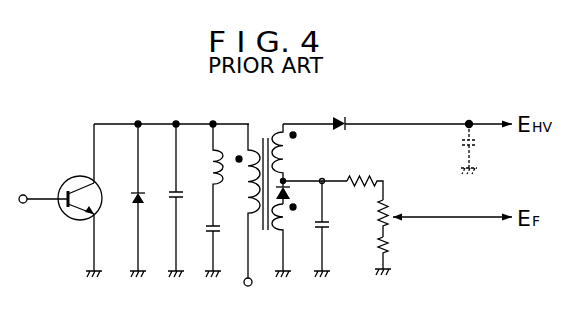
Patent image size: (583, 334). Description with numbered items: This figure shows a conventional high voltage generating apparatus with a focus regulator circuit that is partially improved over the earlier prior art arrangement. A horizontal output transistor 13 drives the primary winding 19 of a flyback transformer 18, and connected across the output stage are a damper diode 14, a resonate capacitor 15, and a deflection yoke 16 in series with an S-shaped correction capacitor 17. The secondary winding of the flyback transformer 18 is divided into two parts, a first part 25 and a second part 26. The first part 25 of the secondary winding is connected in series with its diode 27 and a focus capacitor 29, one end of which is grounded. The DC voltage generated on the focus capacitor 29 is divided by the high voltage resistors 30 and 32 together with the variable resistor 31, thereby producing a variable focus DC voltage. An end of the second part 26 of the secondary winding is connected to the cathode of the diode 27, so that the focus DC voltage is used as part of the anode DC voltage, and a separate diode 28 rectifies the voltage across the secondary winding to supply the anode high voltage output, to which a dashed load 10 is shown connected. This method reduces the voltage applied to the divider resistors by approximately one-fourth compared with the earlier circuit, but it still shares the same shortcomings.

The load capacitance 10 is at (477, 141).
The horizontal output transistor 13 is at (62, 214).
The damper diode 14 is at (147, 195).
The resonate capacitor 15 is at (184, 195).
The deflection yoke 16 is at (224, 152).
The S-shaped correction capacitor 17 is at (208, 230).
The flyback transformer 18 is at (270, 260).
The primary winding 19 is at (249, 195).
The first part of the secondary winding 25 is at (290, 220).
The second part of the secondary winding 26 is at (290, 158).
The diode for the first part of the secondary winding 27 is at (290, 194).
The separate diode 28 is at (342, 116).
The focus capacitor 29 is at (326, 225).
The high voltage resistor 30 is at (372, 179).
The variable resistor 31 is at (387, 207).
The high voltage resistor 32 is at (388, 246).